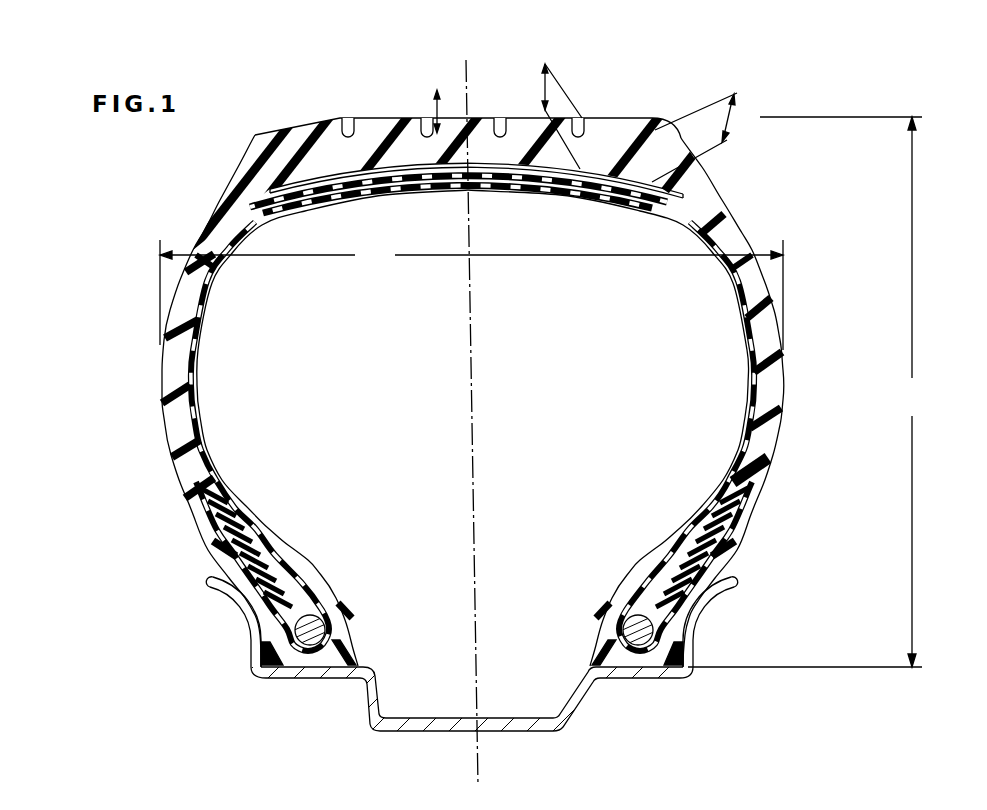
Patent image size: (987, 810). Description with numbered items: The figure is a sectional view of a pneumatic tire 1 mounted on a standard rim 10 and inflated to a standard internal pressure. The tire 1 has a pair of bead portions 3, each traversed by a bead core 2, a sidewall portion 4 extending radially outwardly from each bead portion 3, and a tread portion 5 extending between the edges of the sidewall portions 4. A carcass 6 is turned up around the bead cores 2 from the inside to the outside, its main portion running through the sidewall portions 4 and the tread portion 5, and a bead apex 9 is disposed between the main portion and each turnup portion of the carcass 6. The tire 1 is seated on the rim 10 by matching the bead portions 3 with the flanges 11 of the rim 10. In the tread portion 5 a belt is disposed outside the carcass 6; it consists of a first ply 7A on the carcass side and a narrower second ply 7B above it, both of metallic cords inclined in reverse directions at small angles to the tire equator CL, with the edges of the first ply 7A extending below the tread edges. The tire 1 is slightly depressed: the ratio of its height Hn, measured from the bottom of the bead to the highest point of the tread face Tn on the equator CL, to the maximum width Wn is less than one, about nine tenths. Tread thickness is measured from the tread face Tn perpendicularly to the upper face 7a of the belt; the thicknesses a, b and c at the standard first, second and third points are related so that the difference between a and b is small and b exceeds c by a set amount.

The pneumatic tire 1 is at (748, 136).
The bead core 2 is at (298, 668).
The bead portion 3 is at (252, 620).
The sidewall portion 4 is at (152, 375).
The tread portion 5 is at (468, 160).
The carcass 6 is at (182, 415).
The upper face of the belt 7a is at (323, 170).
The first ply 7A is at (652, 182).
The second ply 7B is at (607, 173).
The bead apex 9 is at (280, 583).
The standard rim 10 is at (480, 673).
The flange 11 is at (250, 606).
The tread thickness at the standard first point a is at (423, 113).
The tread thickness at the standard second point b is at (545, 88).
The tread thickness at the standard third point c is at (735, 112).
The tire equator CL is at (468, 70).
The tire maximum width Wn is at (471, 295).
The height of the tire Hn is at (809, 392).
The tread face Tn is at (660, 110).